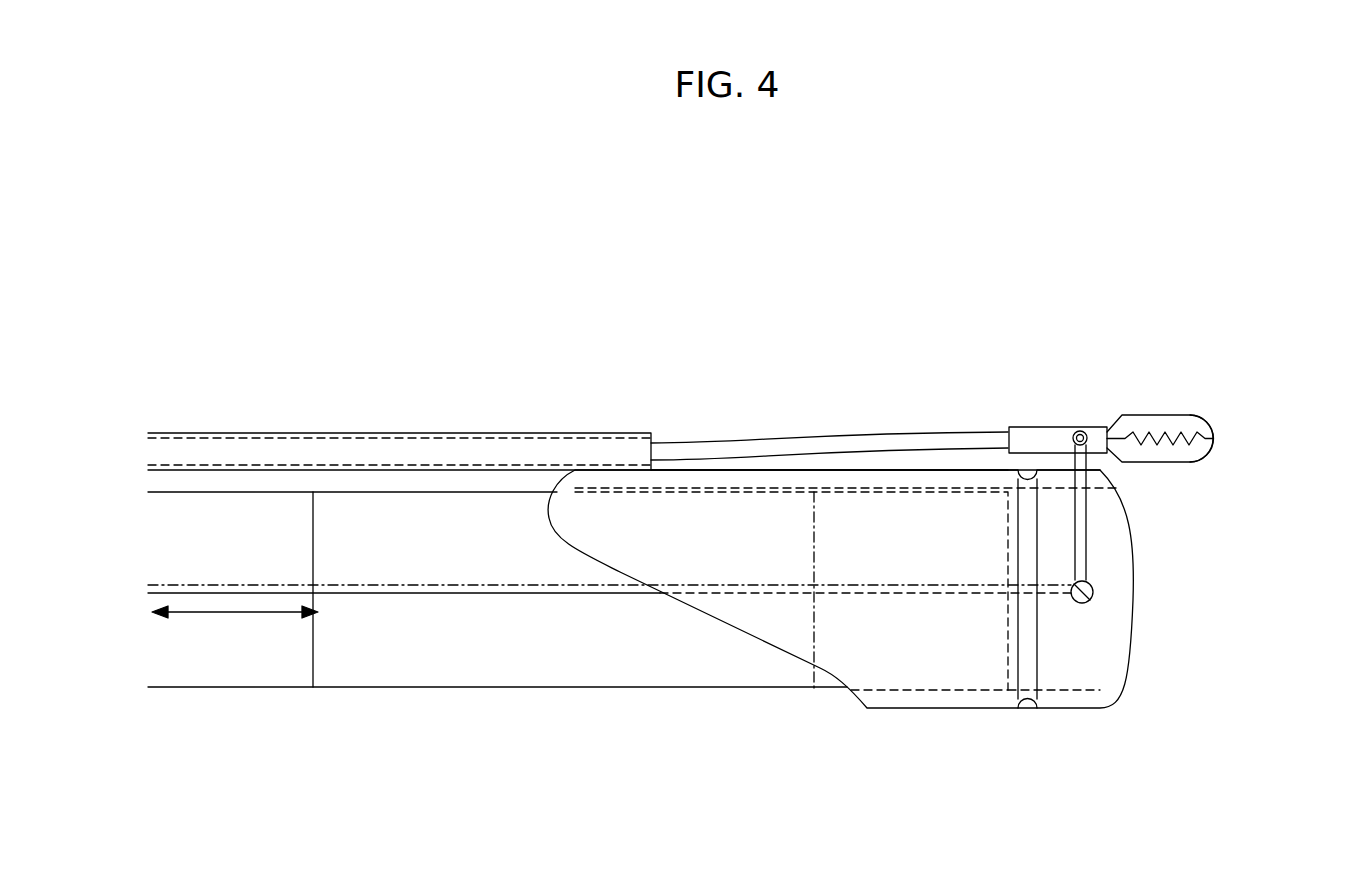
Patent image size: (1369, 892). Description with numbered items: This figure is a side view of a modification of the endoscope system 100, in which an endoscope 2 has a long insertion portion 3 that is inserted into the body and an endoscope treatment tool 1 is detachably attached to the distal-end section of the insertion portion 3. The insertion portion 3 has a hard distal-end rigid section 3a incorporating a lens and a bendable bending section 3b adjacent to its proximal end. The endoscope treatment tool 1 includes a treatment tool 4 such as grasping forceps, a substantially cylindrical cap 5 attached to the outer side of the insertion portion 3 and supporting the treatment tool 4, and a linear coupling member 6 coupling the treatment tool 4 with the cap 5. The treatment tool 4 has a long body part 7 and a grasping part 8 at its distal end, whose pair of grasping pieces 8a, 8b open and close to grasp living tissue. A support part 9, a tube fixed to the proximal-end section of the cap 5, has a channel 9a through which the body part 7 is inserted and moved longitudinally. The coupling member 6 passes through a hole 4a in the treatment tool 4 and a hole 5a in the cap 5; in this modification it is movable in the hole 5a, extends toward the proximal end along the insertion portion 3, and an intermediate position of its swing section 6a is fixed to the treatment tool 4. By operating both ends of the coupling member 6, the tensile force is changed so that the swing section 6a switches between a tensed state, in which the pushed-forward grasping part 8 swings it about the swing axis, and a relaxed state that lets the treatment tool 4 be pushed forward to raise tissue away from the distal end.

The endoscope system 100 is at (183, 261).
The endoscope treatment tool 1 is at (786, 367).
The endoscope 2 is at (870, 627).
The insertion portion 3 is at (609, 639).
The distal-end rigid section 3a is at (937, 692).
The bending section 3b is at (515, 689).
The treatment tool 4 is at (1177, 377).
The hole 4a is at (1071, 434).
The cap 5 is at (913, 468).
The hole 5a is at (1092, 596).
The coupling member 6 is at (415, 596).
The swing section 6a is at (1087, 528).
The body part 7 is at (708, 440).
The grasping part 8 is at (1226, 440).
The grasping piece 8a is at (1196, 427).
The grasping piece 8b is at (1196, 450).
The support part 9 is at (624, 401).
The channel 9a is at (546, 437).